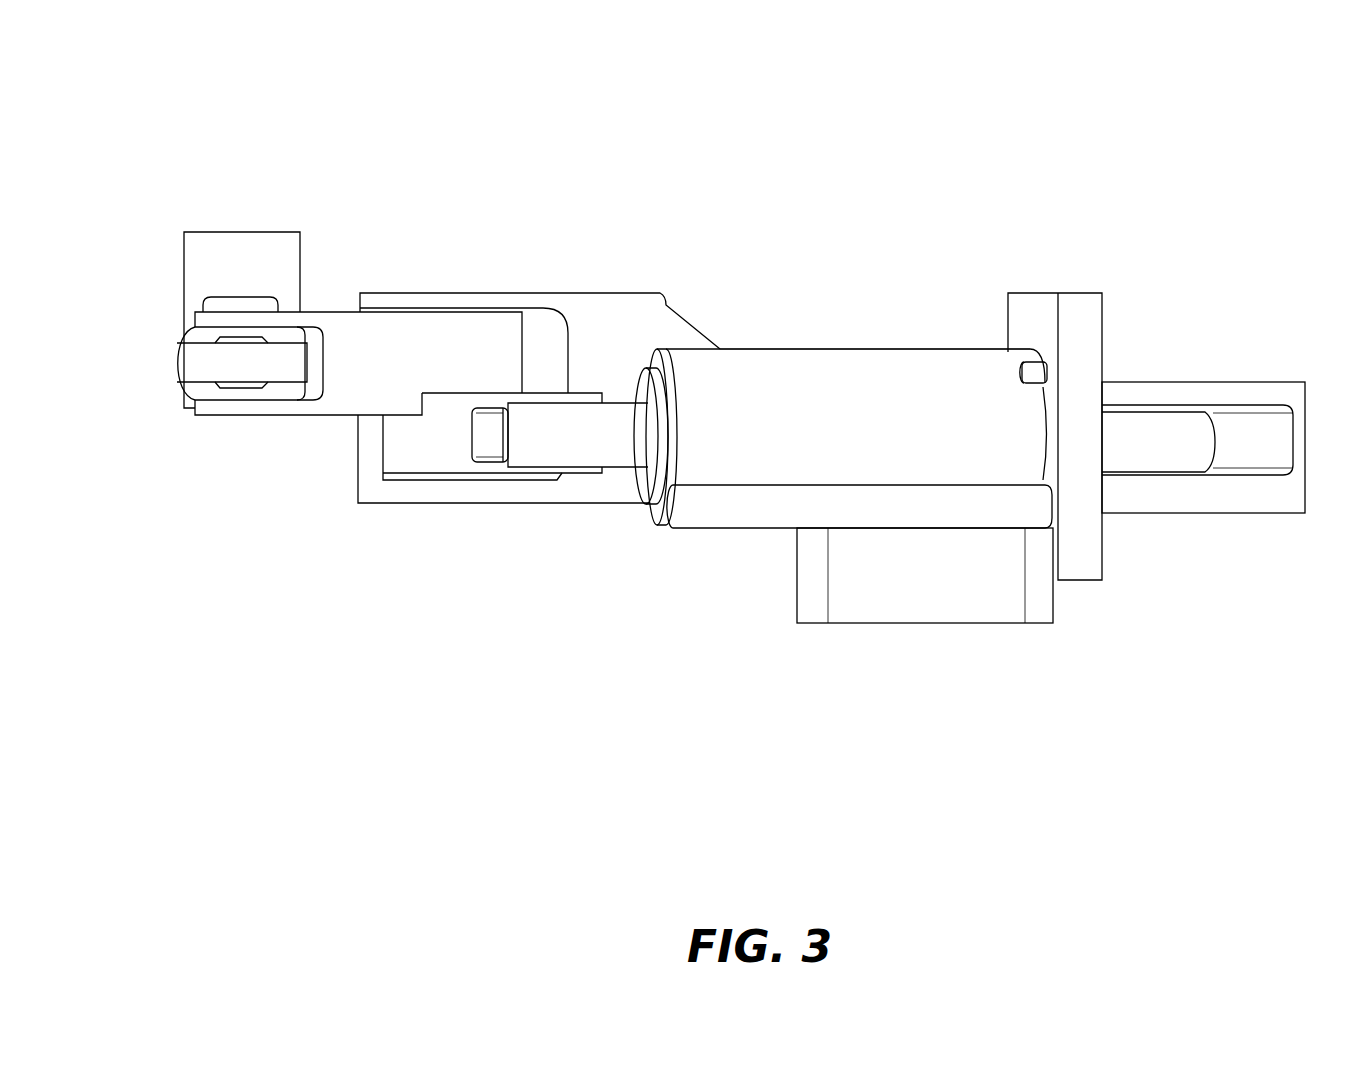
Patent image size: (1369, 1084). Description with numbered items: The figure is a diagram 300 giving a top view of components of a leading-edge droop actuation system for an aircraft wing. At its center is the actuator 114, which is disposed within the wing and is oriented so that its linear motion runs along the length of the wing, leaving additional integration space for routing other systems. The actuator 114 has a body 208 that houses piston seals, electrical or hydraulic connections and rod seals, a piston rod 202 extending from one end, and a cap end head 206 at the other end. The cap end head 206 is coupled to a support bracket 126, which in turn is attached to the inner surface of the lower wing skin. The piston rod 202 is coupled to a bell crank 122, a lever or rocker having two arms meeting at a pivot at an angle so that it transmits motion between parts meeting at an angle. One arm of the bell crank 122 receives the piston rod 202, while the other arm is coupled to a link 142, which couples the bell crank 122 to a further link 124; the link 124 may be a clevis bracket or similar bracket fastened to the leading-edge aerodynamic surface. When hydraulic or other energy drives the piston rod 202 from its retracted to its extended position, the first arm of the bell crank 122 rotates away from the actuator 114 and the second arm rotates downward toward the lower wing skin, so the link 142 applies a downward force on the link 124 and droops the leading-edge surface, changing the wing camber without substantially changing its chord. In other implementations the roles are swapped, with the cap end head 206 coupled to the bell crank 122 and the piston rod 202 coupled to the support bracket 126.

The diagram 300 is at (160, 61).
The link 124 is at (270, 232).
The support bracket 126 is at (627, 295).
The bell crank 122 is at (370, 387).
The link 142 is at (177, 363).
The piston rod 202 is at (623, 452).
The actuator 114 is at (827, 373).
The body 208 is at (877, 352).
The cap end head 206 is at (1127, 435).